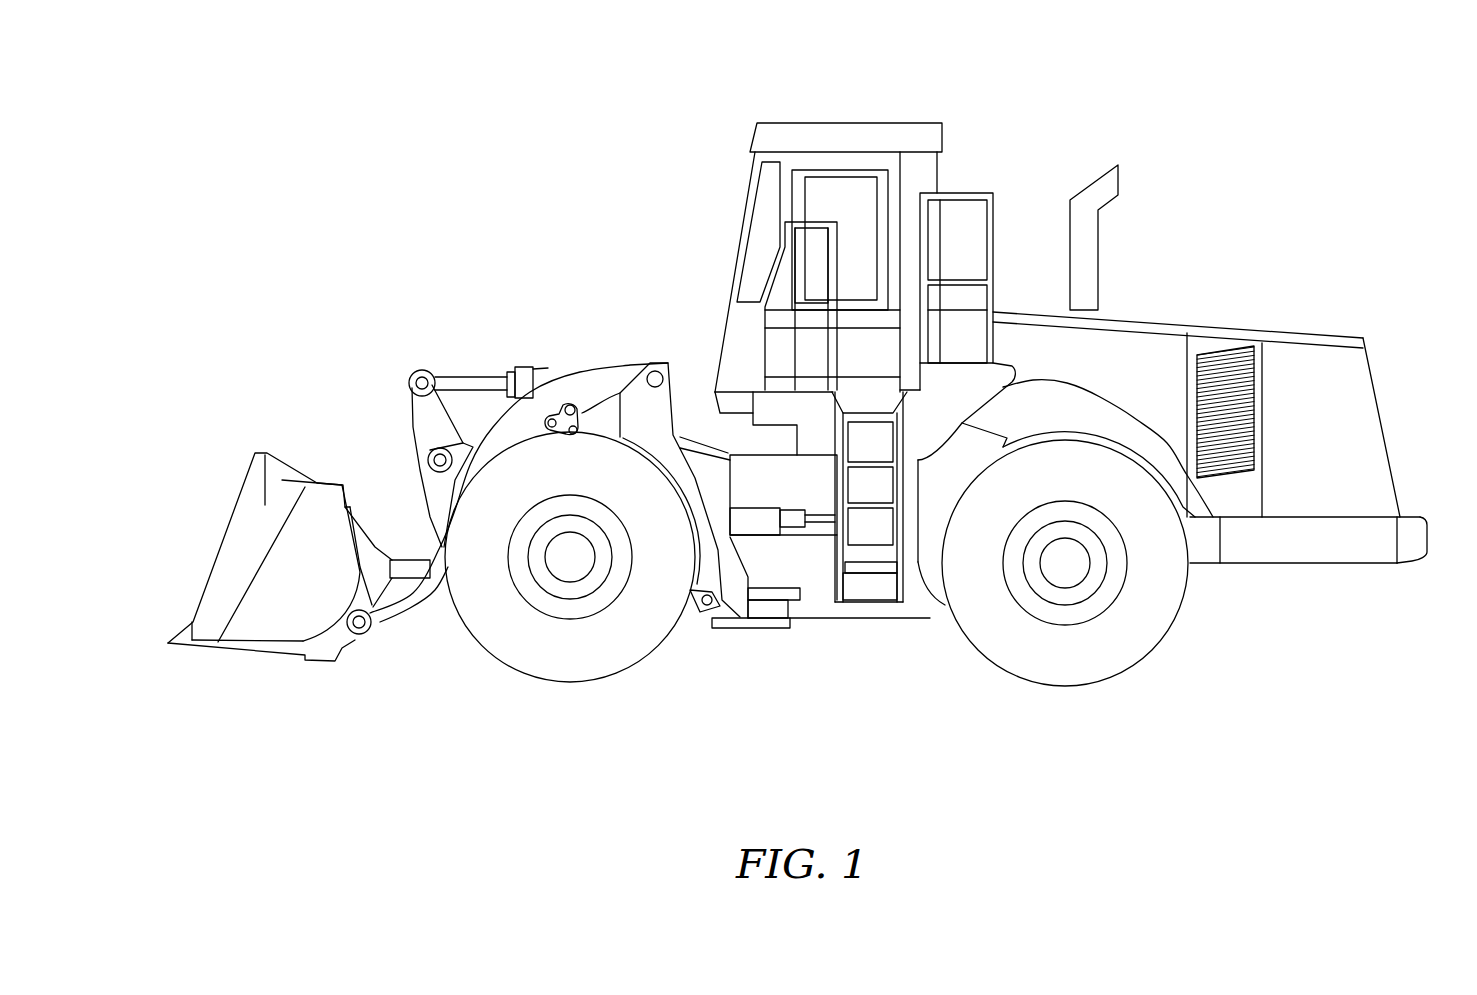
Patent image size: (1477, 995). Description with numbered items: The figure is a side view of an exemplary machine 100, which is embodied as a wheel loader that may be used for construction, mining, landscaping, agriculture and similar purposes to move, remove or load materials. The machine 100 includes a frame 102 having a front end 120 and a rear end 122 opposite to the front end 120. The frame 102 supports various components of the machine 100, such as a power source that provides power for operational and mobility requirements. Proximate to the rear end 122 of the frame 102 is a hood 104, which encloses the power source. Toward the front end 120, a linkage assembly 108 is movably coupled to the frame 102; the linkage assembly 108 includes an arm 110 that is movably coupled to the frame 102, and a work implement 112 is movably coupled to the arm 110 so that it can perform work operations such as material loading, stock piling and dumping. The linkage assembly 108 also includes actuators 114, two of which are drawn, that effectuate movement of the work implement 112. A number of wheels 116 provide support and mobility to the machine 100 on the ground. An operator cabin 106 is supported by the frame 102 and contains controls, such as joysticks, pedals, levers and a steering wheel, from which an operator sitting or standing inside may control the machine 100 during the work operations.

The machine 100 is at (1252, 125).
The frame 102 is at (940, 600).
The hood 104 is at (1315, 378).
The operator cabin 106 is at (842, 128).
The linkage assembly 108 is at (402, 421).
The arm 110 is at (412, 607).
The work implement 112 is at (316, 582).
The actuators 114 is at (537, 372).
The wheels 116 is at (525, 678).
The front end 120 is at (183, 562).
The rear end 122 is at (1436, 527).